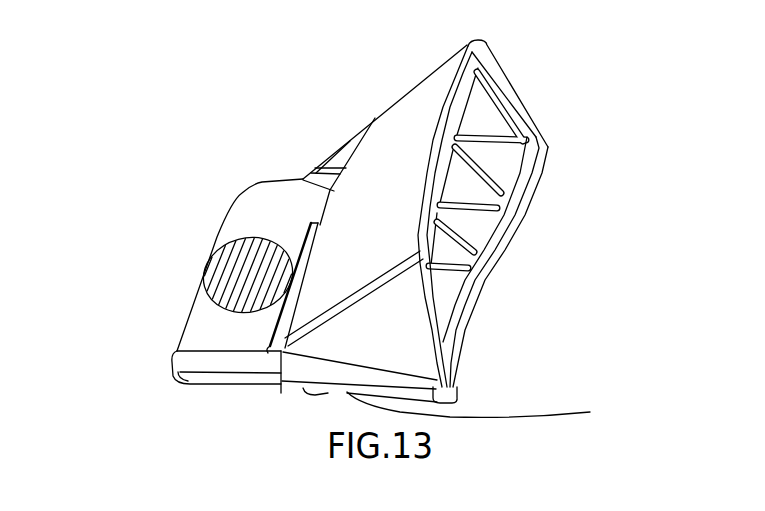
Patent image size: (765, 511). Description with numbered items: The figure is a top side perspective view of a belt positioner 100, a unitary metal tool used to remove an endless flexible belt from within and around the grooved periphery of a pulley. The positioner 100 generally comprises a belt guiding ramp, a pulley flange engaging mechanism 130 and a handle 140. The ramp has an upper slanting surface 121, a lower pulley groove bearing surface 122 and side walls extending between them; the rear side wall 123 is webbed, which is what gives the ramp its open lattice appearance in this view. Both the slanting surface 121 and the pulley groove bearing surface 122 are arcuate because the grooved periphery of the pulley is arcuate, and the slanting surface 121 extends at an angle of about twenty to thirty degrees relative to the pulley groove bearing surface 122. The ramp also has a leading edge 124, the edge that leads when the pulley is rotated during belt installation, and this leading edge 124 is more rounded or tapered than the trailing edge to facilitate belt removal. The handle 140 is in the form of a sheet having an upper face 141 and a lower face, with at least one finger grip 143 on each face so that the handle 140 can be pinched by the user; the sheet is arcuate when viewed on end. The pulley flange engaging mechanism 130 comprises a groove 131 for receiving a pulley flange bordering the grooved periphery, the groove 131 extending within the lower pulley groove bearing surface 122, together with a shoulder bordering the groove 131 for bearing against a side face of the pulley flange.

The belt positioner 100 is at (158, 353).
The upper slanting surface 121 is at (365, 281).
The lower pulley groove bearing surface 122 is at (459, 403).
The rear side wall 123 is at (529, 116).
The leading edge 124 is at (392, 341).
The pulley flange engaging mechanism 130 is at (307, 403).
The groove 131 is at (492, 413).
The handle 140 is at (196, 258).
The upper face 141 is at (299, 196).
The finger grip 143 is at (215, 284).